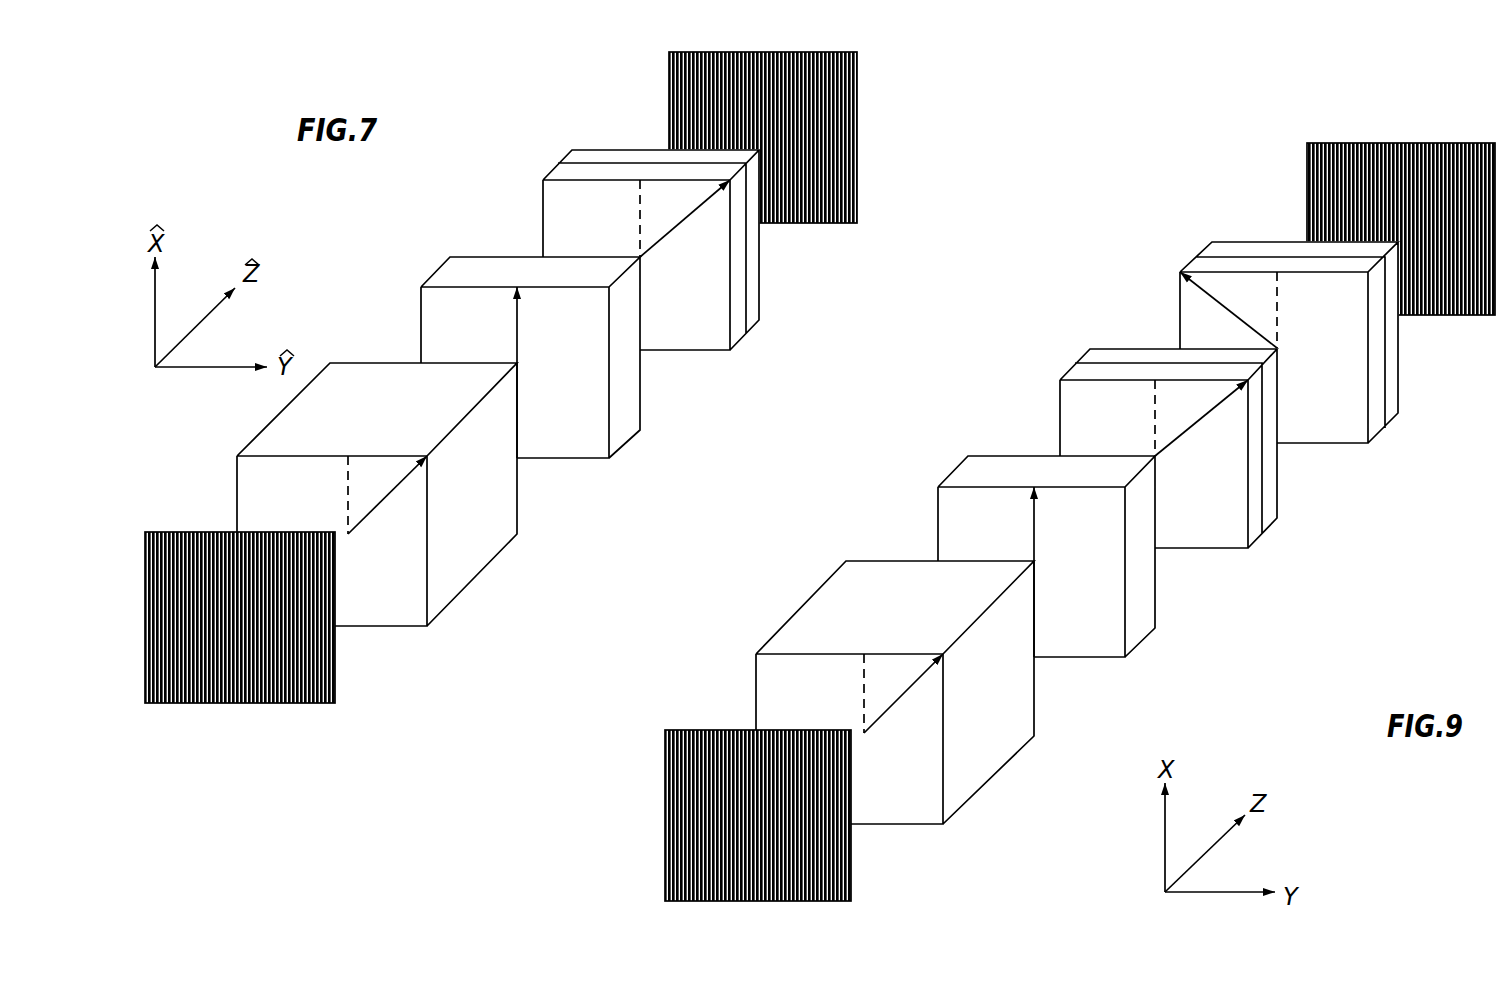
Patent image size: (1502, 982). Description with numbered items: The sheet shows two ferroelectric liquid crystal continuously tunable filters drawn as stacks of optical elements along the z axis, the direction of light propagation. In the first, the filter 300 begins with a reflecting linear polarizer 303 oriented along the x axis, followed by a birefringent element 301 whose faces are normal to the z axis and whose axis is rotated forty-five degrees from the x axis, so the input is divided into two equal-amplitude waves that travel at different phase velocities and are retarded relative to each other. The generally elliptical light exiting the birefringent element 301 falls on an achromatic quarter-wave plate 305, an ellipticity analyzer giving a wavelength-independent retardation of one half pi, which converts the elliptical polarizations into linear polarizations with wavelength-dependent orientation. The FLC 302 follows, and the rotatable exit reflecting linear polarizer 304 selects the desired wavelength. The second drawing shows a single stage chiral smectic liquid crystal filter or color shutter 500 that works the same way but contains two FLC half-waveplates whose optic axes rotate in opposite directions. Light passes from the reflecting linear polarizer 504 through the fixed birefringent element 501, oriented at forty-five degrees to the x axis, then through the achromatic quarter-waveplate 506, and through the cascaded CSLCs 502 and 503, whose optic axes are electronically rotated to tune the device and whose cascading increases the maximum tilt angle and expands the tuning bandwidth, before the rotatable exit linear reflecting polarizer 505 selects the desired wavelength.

In FIG. 7, the continuously tunable filter 300 is at (455, 218).
In FIG. 7, the birefringent element 301 is at (517, 503).
In FIG. 7, the FLC 302 is at (760, 280).
In FIG. 7, the reflecting linear polarizer 303 is at (335, 671).
In FIG. 7, the rotatable exit reflecting linear polarizer 304 is at (857, 153).
In FIG. 7, the achromatic quarter-wave plate 305 is at (640, 400).
In FIG. 9, the continuously tunable filter or color shutter 500 is at (1005, 392).
In FIG. 9, the birefringent element 501 is at (1034, 703).
In FIG. 9, the CSLC 502 is at (1277, 518).
In FIG. 9, the CSLC 503 is at (1272, 242).
In FIG. 9, the reflecting linear polarizer 504 is at (851, 868).
In FIG. 9, the rotatable exit linear reflecting polarizer 505 is at (1473, 143).
In FIG. 9, the achromatic quarter-waveplate 506 is at (1155, 600).